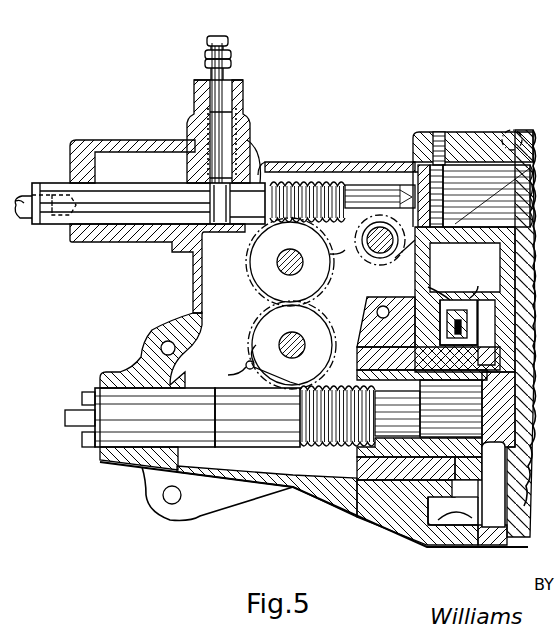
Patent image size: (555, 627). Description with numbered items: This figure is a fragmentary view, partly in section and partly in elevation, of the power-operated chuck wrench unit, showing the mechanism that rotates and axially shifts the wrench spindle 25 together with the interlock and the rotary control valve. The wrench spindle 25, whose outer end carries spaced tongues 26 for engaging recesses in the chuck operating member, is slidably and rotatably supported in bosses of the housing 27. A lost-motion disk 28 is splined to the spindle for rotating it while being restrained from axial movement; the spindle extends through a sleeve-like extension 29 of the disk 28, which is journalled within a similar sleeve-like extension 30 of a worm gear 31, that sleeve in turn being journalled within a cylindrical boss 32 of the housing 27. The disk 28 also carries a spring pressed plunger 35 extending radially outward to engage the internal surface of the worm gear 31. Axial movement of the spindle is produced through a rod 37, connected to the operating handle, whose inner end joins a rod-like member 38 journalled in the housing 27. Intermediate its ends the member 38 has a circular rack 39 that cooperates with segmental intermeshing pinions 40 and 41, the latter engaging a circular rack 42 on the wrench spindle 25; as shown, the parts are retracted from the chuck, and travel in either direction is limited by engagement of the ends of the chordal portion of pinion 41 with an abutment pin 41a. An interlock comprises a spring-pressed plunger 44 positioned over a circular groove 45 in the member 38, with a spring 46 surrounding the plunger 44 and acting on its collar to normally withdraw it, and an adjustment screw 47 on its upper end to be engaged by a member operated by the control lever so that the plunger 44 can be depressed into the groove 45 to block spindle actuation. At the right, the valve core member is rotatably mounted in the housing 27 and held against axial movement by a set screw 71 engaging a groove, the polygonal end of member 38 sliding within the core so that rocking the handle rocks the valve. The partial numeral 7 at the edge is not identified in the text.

The splined drive shaft 7 is at (518, 212).
The wrench spindle 25 is at (275, 447).
The spaced tongues 26 is at (87, 450).
The housing 27 is at (183, 298).
The lost-motion disk 28 is at (458, 468).
The sleeve-like extension 29 is at (360, 450).
The sleeve-like extension 30 is at (360, 470).
The worm gear 31 is at (480, 527).
The cylindrical portion or boss 32 is at (367, 507).
The spring pressed plunger 35 is at (462, 327).
The rod 37 is at (25, 219).
The rod-like member 38 is at (250, 178).
The circular rack 39 is at (345, 175).
The segmental pinion 40 is at (315, 283).
The segmental pinion 41 is at (328, 332).
The abutment pin 41a is at (246, 367).
The circular rack 42 is at (281, 481).
The spring-pressed plunger 44 is at (222, 143).
The circular groove 45 is at (220, 195).
The spring 46 is at (236, 112).
The adjustment screw 47 is at (229, 40).
The set screw 71 is at (448, 128).